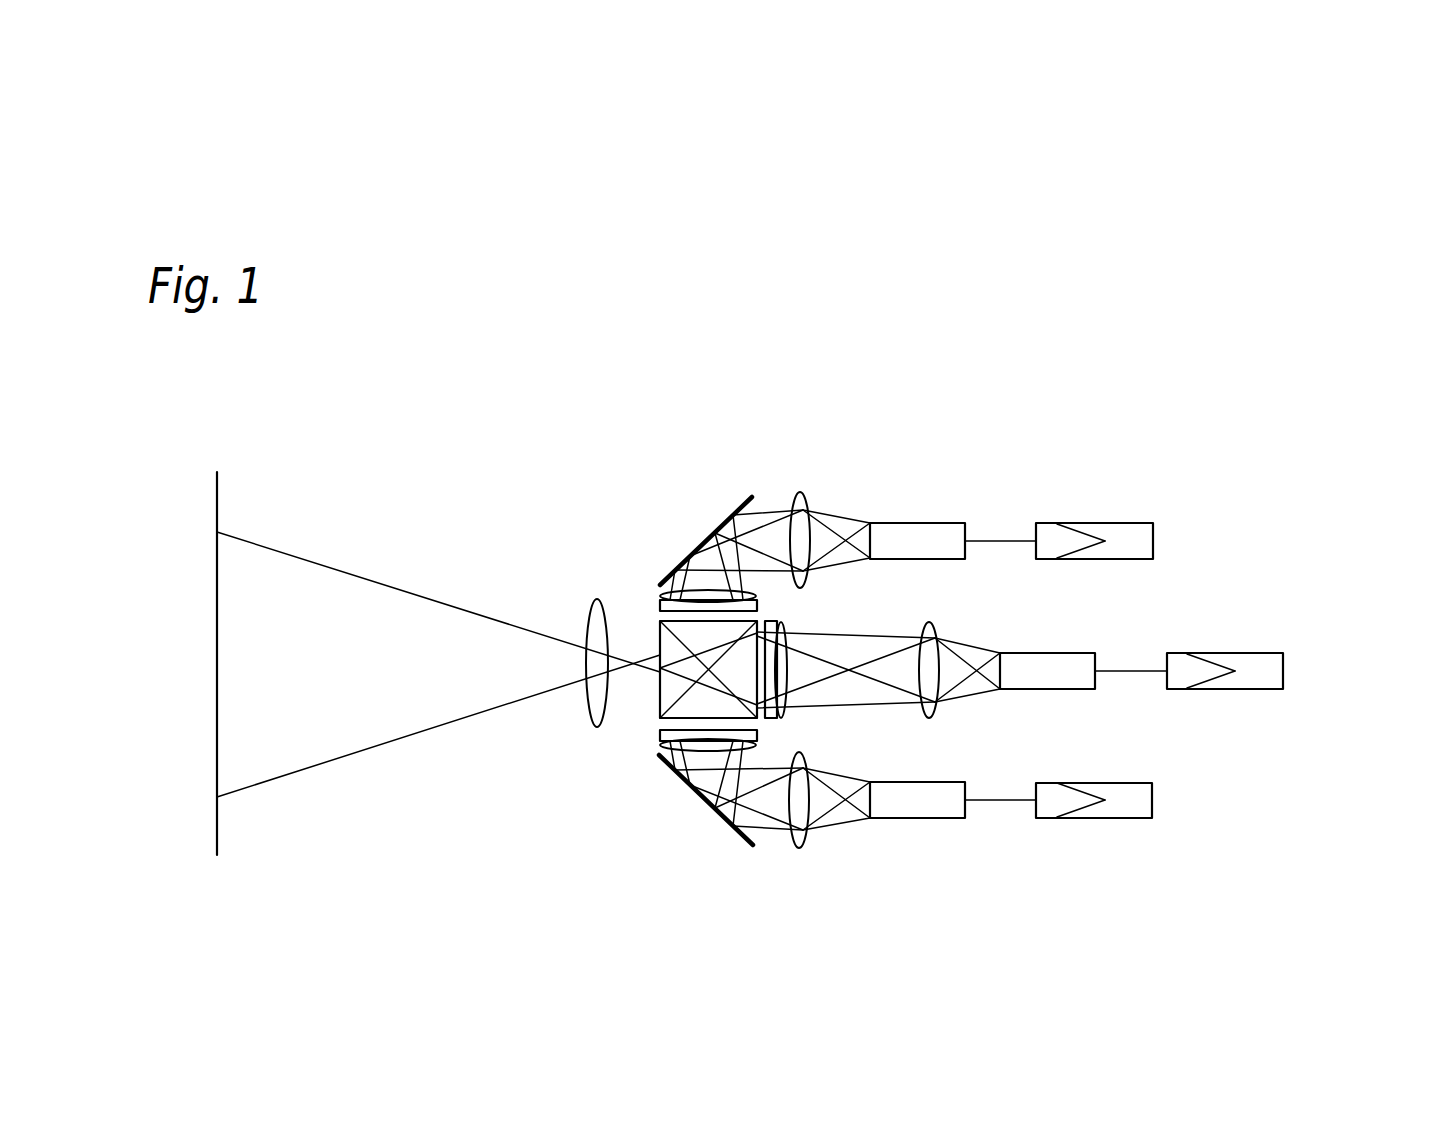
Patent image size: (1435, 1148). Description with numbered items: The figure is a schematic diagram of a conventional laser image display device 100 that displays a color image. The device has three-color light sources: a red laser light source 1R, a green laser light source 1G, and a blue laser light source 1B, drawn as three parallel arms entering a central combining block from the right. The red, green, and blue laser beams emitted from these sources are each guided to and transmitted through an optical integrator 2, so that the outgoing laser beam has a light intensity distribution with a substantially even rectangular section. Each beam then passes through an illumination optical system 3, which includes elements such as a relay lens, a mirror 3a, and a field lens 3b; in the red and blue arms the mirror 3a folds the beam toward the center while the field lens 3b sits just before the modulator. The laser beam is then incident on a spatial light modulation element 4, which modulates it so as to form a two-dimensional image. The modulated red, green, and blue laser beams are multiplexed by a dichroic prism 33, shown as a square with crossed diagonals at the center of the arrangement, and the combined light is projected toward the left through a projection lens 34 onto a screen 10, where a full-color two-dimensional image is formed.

The laser image display device 100 is at (810, 344).
The screen 10 is at (217, 500).
The red laser light source 1R is at (1105, 467).
The green laser light source 1G is at (1207, 653).
The blue laser light source 1B is at (1071, 818).
The optical integrator 2 is at (918, 522).
The illumination optical system 3 is at (806, 438).
The mirror 3a is at (749, 496).
The field lens 3b is at (758, 596).
The spatial light modulation element 4 is at (660, 606).
The dichroic prism 33 is at (660, 643).
The projection lens 34 is at (590, 706).